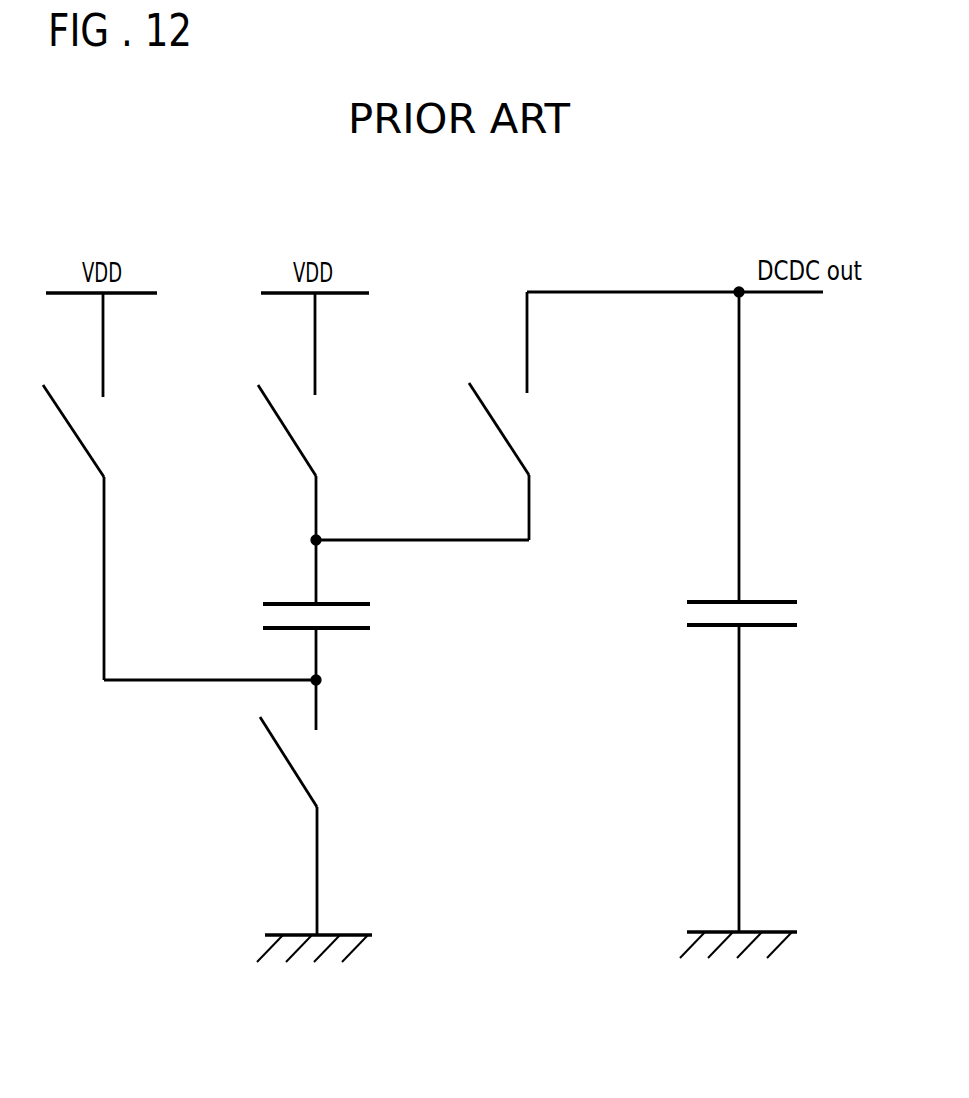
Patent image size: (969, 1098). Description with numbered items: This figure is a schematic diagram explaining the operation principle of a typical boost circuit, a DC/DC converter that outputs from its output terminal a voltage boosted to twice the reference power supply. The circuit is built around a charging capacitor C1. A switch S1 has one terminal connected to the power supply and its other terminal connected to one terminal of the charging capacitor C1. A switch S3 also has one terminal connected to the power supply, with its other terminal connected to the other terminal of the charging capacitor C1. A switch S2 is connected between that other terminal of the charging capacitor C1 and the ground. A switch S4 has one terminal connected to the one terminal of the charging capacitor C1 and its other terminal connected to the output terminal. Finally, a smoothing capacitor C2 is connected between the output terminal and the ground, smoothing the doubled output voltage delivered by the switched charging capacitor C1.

The switch S1 is at (282, 462).
The switch S2 is at (284, 826).
The switch S3 is at (73, 444).
The switch S4 is at (499, 461).
The charging capacitor C1 is at (324, 610).
The smoothing capacitor C2 is at (750, 767).